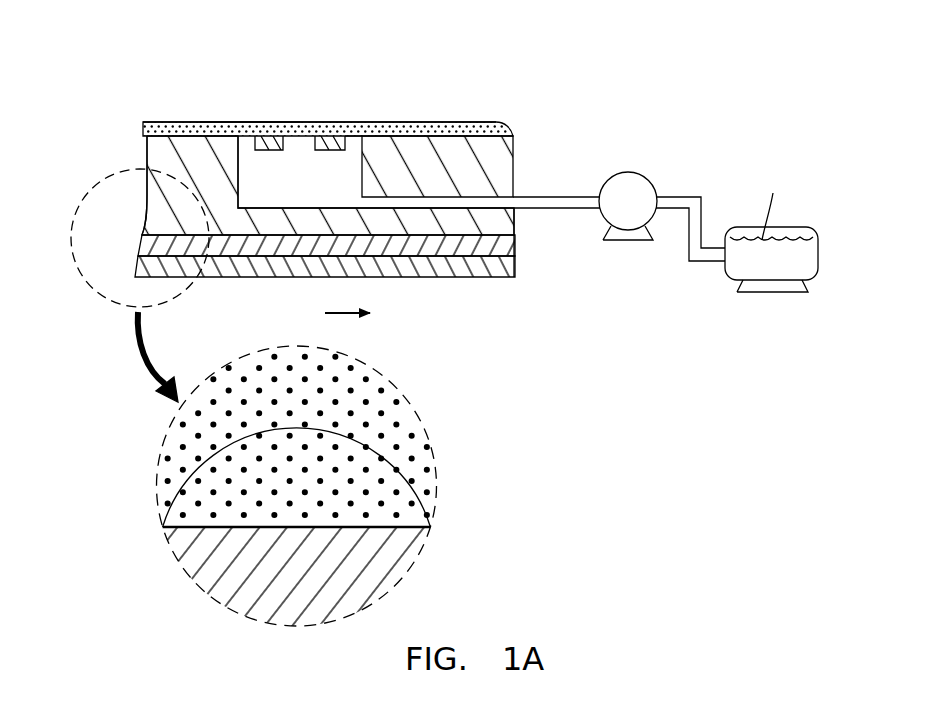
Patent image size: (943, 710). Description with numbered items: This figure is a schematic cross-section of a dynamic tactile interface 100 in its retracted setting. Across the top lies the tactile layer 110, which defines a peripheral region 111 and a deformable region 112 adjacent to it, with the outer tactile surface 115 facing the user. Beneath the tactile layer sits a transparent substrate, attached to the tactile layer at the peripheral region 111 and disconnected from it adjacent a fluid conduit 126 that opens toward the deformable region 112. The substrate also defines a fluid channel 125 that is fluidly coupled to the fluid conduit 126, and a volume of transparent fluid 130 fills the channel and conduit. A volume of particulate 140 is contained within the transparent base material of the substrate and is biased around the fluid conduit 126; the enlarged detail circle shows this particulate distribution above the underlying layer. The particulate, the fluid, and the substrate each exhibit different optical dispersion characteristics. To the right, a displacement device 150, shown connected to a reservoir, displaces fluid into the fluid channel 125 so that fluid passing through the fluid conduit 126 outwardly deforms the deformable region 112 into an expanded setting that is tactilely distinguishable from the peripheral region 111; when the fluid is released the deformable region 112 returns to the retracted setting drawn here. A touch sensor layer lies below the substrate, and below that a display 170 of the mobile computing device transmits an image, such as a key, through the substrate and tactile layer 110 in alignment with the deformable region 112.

The dynamic tactile interface 100 is at (582, 86).
The tactile layer 110 is at (143, 128).
The peripheral region 111 is at (205, 117).
The deformable region 112 is at (270, 117).
The tactile surface 115 is at (237, 117).
The fluid channel 125 is at (463, 200).
The fluid conduit 126 is at (355, 146).
The volume of transparent fluid 130 is at (300, 173).
The volume of particulate 140 is at (397, 517).
The displacement device 150 is at (628, 185).
The display 170 is at (473, 263).